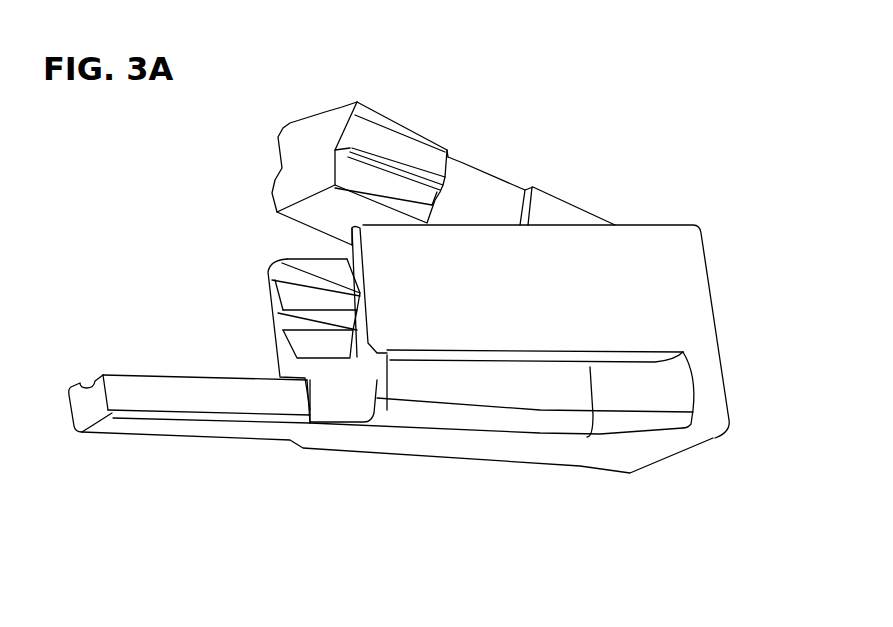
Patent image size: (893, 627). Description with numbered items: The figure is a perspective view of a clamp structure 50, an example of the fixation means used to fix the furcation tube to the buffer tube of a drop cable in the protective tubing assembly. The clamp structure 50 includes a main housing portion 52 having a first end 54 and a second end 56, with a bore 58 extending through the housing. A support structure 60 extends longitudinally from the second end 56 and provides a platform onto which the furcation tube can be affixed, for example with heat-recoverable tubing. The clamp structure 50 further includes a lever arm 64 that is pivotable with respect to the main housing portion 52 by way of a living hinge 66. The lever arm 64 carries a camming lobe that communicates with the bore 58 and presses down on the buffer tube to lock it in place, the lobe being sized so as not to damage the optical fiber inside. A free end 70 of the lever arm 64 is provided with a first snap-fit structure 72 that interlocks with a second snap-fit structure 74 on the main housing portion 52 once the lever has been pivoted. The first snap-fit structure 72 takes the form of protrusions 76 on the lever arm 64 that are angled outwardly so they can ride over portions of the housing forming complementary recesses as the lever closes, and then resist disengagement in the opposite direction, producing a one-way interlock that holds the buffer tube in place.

The clamp structure 50 is at (453, 478).
The main housing portion 52 is at (712, 315).
The first end 54 is at (737, 349).
The second end 56 is at (256, 341).
The bore 58 is at (343, 377).
The support structure 60 is at (135, 422).
The lever arm 64 is at (478, 173).
The living hinge 66 is at (561, 620).
The free end 70 is at (297, 155).
The first snap-fit structure 72 is at (370, 137).
The second snap-fit structure 74 is at (290, 292).
The protrusions 76 is at (400, 188).